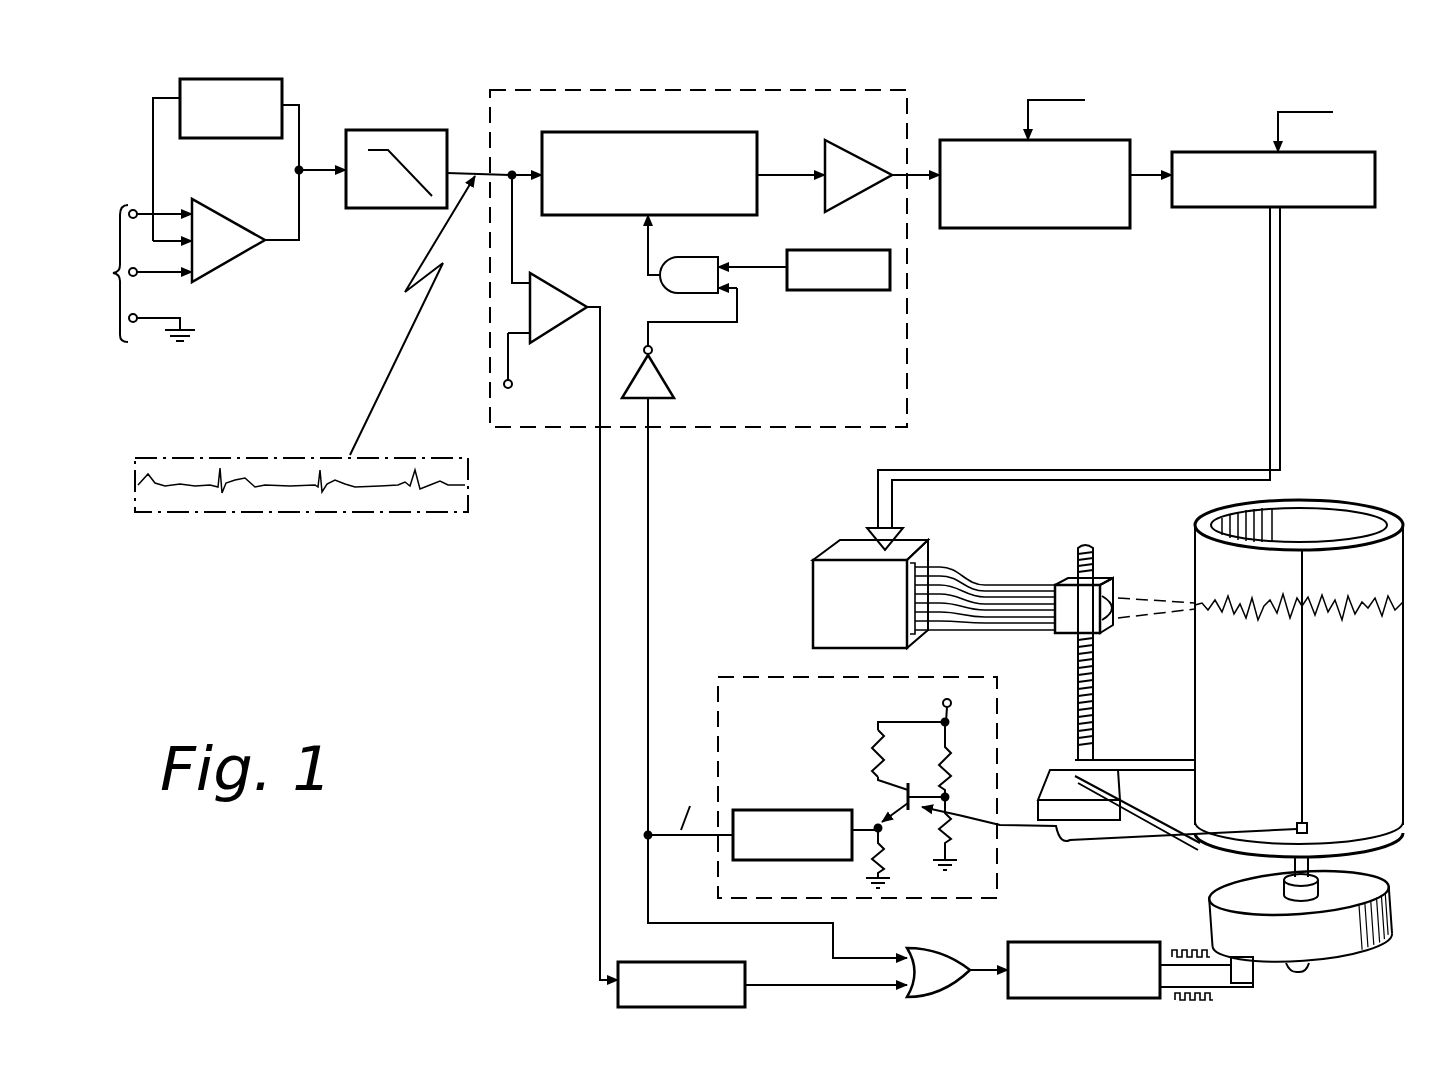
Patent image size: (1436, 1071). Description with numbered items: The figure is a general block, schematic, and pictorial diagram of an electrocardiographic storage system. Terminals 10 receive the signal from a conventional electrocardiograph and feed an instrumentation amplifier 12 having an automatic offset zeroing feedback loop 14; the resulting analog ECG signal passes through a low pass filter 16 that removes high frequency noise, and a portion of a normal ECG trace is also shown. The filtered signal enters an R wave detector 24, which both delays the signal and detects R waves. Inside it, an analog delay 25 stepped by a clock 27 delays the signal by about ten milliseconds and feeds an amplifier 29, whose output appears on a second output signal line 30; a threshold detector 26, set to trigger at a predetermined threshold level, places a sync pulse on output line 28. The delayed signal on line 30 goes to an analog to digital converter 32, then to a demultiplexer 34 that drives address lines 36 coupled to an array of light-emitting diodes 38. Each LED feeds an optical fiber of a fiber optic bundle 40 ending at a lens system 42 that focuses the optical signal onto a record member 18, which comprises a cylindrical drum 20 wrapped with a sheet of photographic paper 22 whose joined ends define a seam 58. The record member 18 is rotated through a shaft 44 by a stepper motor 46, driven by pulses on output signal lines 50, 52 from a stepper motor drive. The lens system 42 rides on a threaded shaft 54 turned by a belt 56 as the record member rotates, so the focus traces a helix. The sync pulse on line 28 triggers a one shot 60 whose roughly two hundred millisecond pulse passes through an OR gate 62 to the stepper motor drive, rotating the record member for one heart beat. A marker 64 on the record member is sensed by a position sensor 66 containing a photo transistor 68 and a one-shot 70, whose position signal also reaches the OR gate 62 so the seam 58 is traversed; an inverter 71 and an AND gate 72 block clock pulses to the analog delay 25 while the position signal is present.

The terminals 10 is at (105, 273).
The instrumentation amplifier 12 is at (226, 256).
The automatic offset zeroing feedback loop 14 is at (283, 84).
The low pass filter 16 is at (415, 131).
The record member 18 is at (1397, 480).
The cylindrical drum 20 is at (1313, 507).
The sheet of photographic paper 22 is at (1375, 710).
The R wave detector 24 is at (907, 103).
The analog delay 25 is at (667, 132).
The threshold detector 26 is at (562, 322).
The clock 27 is at (830, 248).
The output line 28 is at (600, 544).
The amplifier 29 is at (876, 140).
The second output signal line 30 is at (920, 168).
The analog to digital converter 32 is at (1030, 229).
The demultiplexer 34 is at (1340, 207).
The address lines 36 is at (1273, 343).
The array of light-emitting diodes 38 is at (833, 552).
The fiber optic bundle 40 is at (1003, 548).
The lens system 42 is at (1100, 583).
The shaft 44 is at (1284, 881).
The stepper motor 46 is at (1120, 922).
The output signal line 50 is at (1233, 985).
The output signal line 52 is at (1240, 1003).
The threaded shaft 54 is at (1092, 543).
The belt 56 is at (1137, 757).
The seam 58 is at (1303, 760).
The marker 64 is at (1298, 822).
The position sensor 66 is at (773, 676).
The photo transistor 68 is at (897, 798).
The one-shot 70 is at (777, 808).
The inverter 71 is at (660, 384).
The AND gate 72 is at (682, 294).
The one shot 60 is at (675, 960).
The OR gate 62 is at (942, 958).